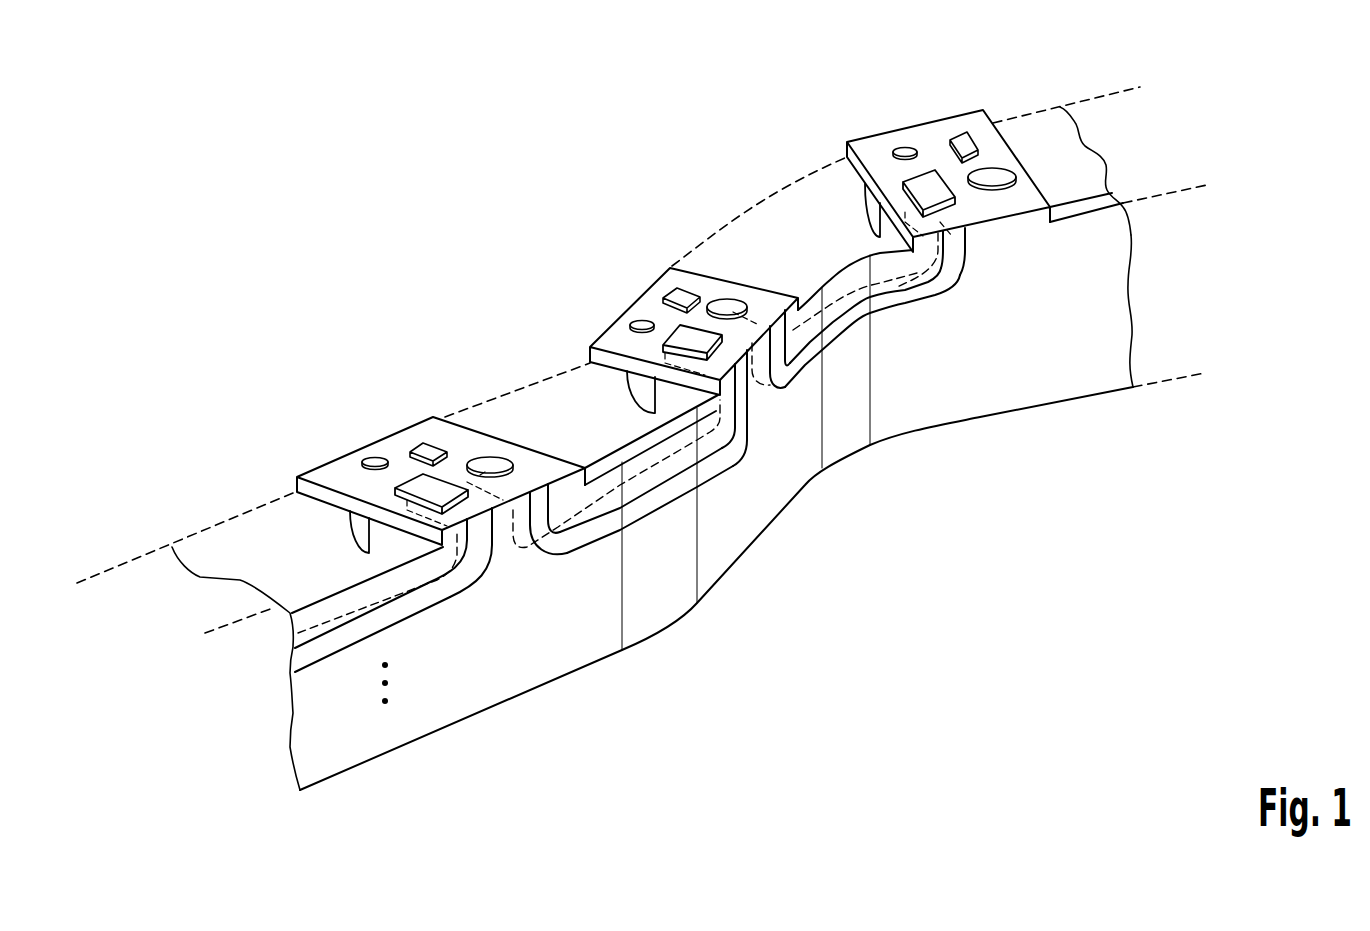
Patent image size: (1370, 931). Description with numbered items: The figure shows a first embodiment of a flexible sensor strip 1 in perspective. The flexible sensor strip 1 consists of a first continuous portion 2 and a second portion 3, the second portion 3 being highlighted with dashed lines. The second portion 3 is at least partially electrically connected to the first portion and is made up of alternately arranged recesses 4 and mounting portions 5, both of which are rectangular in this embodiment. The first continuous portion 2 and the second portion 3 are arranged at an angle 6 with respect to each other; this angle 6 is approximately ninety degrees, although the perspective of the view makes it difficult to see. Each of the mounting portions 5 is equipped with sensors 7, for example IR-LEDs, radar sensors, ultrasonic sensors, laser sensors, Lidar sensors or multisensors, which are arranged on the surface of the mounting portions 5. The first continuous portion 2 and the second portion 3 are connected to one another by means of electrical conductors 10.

The flexible sensor strip 1 is at (332, 216).
The first continuous portion 2 is at (1210, 187).
The second portion 3 is at (1142, 88).
The recesses 4 is at (246, 517).
The mounting portions 5 is at (358, 441).
The angle 6 is at (357, 527).
The sensors 7 is at (437, 488).
The electrical conductors 10 is at (450, 592).